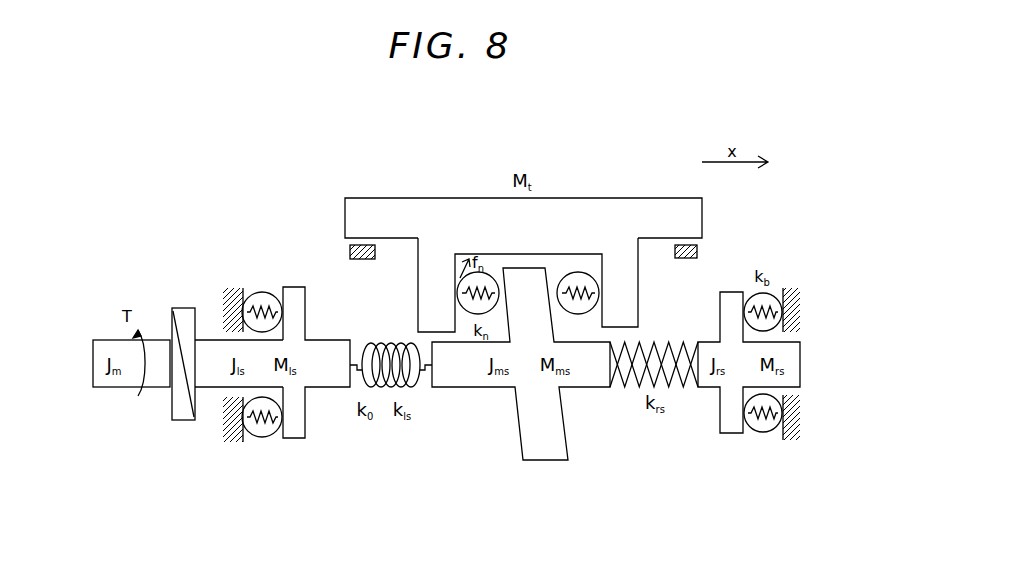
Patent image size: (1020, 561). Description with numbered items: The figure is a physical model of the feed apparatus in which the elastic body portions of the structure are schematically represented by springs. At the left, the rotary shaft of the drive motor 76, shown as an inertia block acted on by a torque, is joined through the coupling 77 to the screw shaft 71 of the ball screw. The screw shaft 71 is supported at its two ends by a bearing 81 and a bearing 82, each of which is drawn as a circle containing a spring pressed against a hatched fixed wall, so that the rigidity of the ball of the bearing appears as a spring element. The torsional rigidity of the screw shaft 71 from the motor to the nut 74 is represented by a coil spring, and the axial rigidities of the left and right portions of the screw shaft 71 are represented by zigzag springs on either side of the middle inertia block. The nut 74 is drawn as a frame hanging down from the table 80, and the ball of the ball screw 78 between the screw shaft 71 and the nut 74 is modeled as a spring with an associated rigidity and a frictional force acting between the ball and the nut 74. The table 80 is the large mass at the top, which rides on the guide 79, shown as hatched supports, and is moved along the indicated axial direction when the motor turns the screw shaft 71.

The screw shaft 71 is at (470, 388).
The nut 74 is at (638, 287).
The rotary shaft of drive motor 76 is at (113, 388).
The coupling 77 is at (183, 308).
The ball of the ball screw 78 is at (459, 306).
The guide 79 is at (350, 250).
The table 80 is at (596, 198).
The bearing 81 is at (269, 450).
The bearing 82 is at (772, 447).